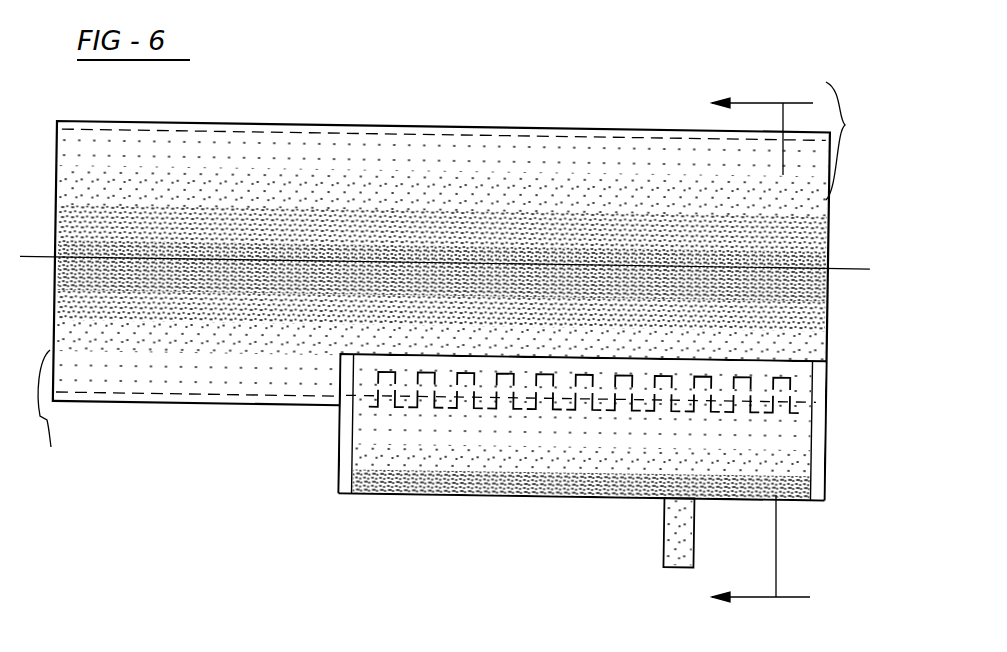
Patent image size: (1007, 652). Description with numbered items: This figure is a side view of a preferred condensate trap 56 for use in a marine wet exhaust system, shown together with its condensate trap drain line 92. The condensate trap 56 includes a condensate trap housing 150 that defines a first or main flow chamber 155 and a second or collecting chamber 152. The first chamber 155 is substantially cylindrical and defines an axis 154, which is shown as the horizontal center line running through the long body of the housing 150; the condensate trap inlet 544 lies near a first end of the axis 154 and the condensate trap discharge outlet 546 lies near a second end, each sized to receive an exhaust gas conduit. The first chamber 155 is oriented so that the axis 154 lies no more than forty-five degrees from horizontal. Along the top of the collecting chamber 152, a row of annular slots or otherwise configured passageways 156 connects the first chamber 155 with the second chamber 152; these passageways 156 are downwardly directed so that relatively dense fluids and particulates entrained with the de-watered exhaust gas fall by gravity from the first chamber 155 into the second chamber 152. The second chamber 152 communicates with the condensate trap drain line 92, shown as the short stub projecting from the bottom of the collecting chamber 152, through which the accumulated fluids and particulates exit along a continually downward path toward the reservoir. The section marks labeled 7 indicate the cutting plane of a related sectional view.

The condensate trap housing 150 is at (407, 153).
The second or collecting chamber 152 is at (430, 468).
The axis 154 is at (183, 258).
The first or main flow chamber 155 is at (211, 350).
The passageways 156 is at (618, 410).
The condensate trap 56 is at (325, 428).
The condensate trap drain line 92 is at (663, 543).
The condensate trap inlet 544 is at (46, 416).
The condensate trap discharge outlet 546 is at (807, 135).
The section line 7- 7 is at (773, 351).